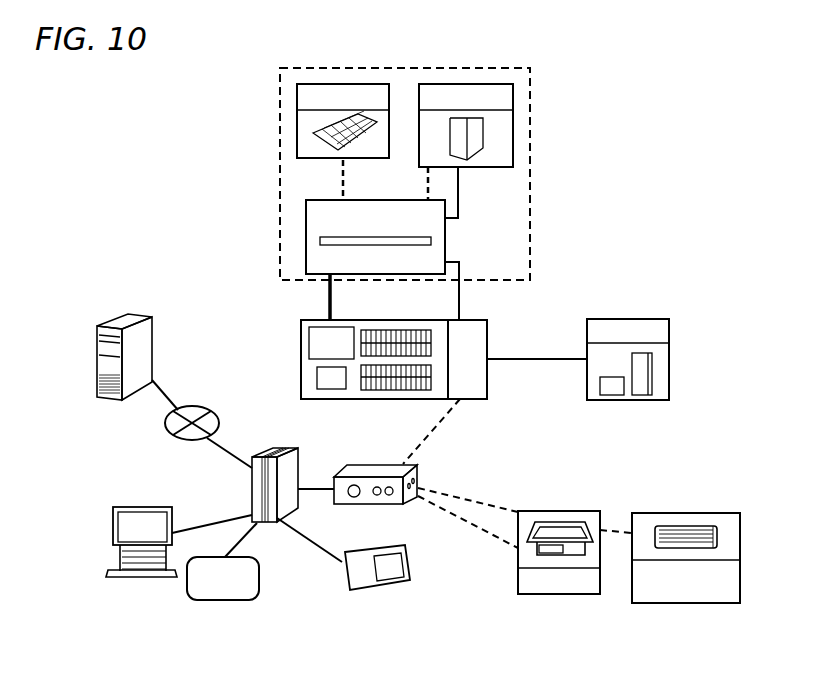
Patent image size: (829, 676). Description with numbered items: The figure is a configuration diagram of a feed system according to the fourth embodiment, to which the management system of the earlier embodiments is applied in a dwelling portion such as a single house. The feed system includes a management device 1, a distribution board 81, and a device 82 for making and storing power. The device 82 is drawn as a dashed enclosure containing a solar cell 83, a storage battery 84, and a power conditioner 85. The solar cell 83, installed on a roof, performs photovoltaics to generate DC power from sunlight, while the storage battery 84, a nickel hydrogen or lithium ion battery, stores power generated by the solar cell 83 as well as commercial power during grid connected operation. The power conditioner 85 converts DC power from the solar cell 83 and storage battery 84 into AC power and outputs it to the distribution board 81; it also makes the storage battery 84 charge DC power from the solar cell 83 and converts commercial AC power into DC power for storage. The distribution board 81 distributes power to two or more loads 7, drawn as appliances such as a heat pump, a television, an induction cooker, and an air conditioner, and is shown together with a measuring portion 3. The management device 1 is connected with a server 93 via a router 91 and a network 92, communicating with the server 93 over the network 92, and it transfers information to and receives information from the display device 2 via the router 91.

The management device 1 is at (364, 470).
The display device 2 is at (393, 585).
The measuring portion 3 is at (480, 340).
The loads 7 is at (662, 370).
The distribution board 81 is at (301, 326).
The device for making and storing power 82 is at (538, 78).
The solar cell 83 is at (302, 131).
The storage battery 84 is at (505, 139).
The power conditioner 85 is at (316, 223).
The router 91 is at (272, 445).
The network 92 is at (190, 406).
The server 93 is at (110, 315).